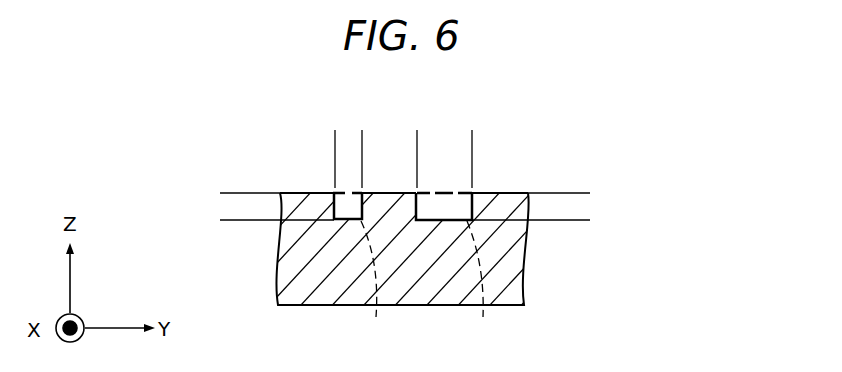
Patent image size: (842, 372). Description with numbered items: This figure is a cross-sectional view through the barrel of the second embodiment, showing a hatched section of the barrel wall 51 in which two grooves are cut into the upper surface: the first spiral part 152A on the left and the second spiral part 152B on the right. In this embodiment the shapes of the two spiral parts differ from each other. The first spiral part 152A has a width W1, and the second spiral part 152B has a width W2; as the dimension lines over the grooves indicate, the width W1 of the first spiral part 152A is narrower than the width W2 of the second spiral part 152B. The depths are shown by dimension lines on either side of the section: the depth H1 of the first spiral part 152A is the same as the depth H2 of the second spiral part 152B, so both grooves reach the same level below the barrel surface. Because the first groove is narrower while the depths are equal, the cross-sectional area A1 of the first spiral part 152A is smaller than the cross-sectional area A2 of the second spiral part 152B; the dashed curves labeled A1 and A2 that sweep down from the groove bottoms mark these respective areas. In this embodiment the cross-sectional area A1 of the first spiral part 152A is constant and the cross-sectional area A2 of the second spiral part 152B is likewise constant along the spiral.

The substrate 51 is at (515, 192).
The first spiral part 152A is at (329, 187).
The second spiral part 152B is at (479, 186).
The width of the first spiral part W1 is at (379, 138).
The width of the second spiral part W2 is at (489, 138).
The depth of the first spiral part H1 is at (223, 177).
The depth of the second spiral part H2 is at (582, 177).
The cross-sectional area of the first spiral part A1 is at (374, 283).
The cross-sectional area of the second spiral part A2 is at (482, 283).